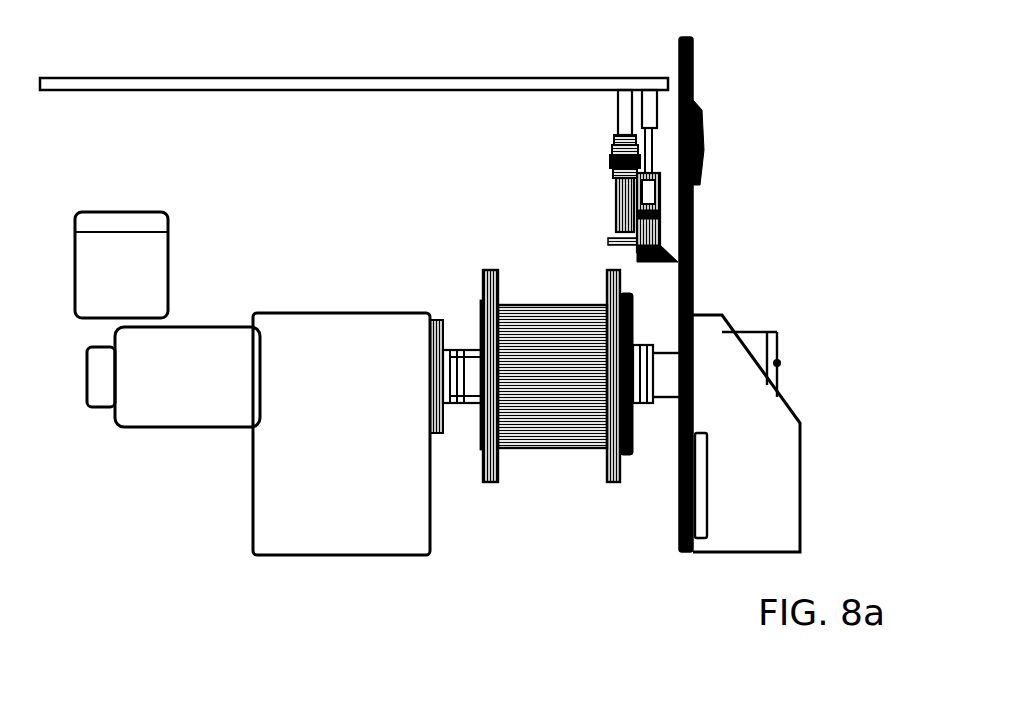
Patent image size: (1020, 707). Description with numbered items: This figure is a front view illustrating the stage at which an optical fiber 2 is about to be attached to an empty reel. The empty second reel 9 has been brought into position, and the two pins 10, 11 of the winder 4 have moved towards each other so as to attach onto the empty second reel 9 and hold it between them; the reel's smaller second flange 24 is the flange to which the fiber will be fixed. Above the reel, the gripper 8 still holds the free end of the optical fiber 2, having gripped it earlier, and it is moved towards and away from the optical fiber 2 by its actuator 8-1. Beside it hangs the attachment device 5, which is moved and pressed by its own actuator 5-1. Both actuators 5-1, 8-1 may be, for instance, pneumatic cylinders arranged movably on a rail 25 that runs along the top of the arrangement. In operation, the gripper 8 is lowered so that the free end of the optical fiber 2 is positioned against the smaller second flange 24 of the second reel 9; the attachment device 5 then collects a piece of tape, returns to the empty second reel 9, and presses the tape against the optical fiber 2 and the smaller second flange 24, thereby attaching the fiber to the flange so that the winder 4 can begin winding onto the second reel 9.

The optical fiber 2 is at (665, 241).
The winder 4 is at (728, 561).
The attachment device 5 is at (608, 163).
The actuator 5-1 is at (607, 109).
The gripper 8 is at (665, 178).
The actuator 8-1 is at (662, 112).
The second reel 9 is at (517, 297).
The pin 10 is at (462, 345).
The pin 11 is at (661, 349).
The smaller second flange 24 is at (627, 463).
The rail 25 is at (272, 77).